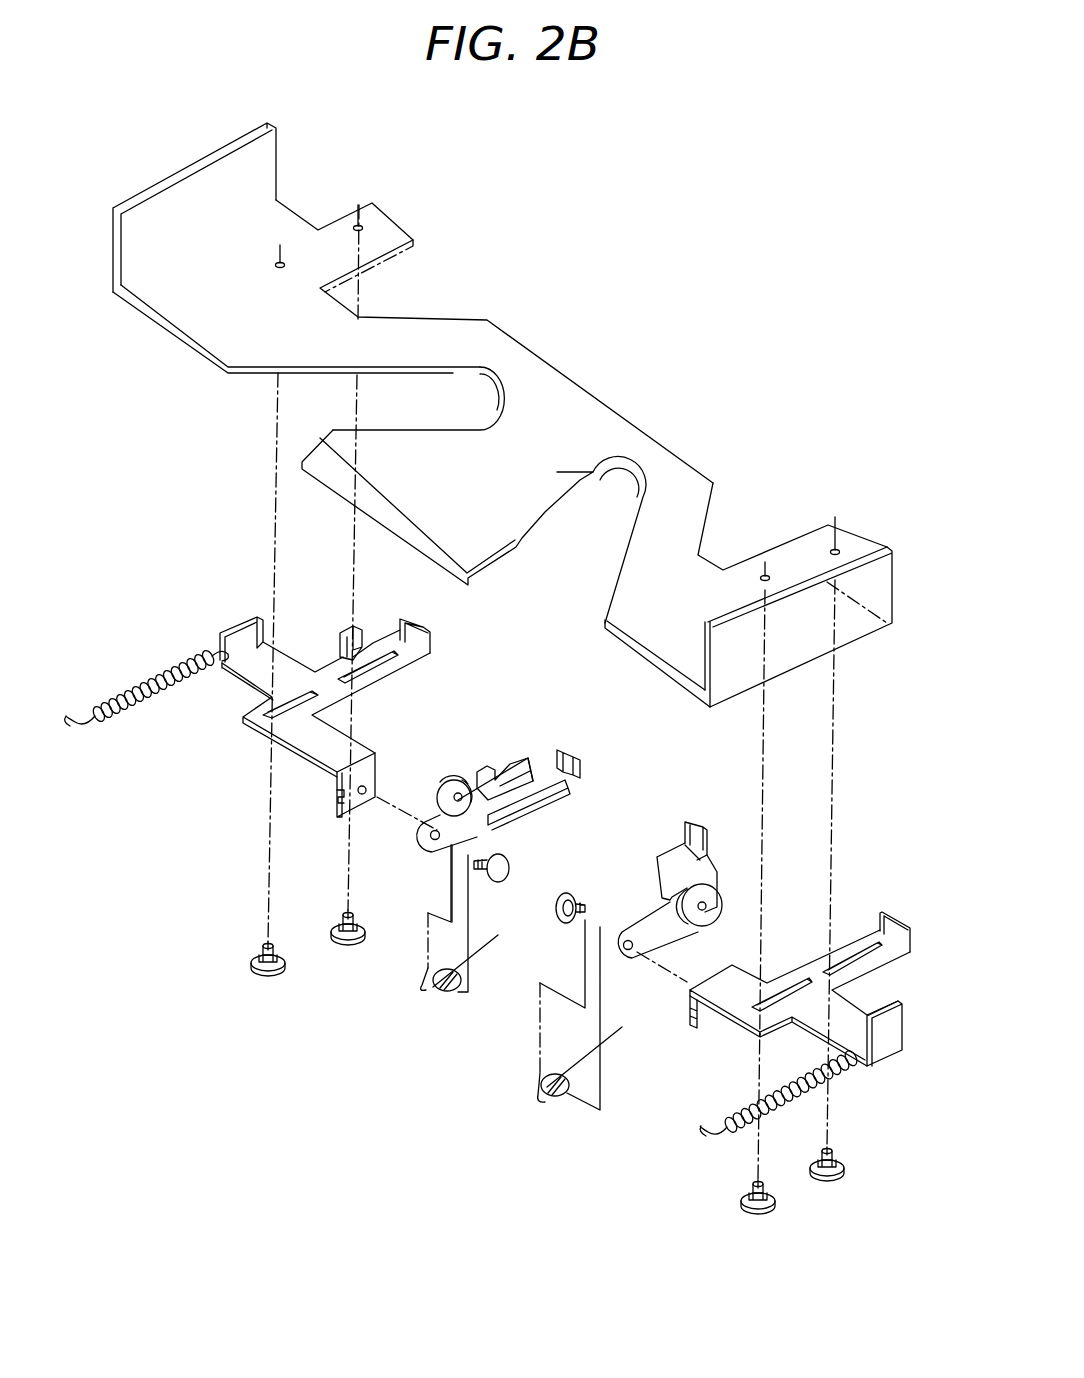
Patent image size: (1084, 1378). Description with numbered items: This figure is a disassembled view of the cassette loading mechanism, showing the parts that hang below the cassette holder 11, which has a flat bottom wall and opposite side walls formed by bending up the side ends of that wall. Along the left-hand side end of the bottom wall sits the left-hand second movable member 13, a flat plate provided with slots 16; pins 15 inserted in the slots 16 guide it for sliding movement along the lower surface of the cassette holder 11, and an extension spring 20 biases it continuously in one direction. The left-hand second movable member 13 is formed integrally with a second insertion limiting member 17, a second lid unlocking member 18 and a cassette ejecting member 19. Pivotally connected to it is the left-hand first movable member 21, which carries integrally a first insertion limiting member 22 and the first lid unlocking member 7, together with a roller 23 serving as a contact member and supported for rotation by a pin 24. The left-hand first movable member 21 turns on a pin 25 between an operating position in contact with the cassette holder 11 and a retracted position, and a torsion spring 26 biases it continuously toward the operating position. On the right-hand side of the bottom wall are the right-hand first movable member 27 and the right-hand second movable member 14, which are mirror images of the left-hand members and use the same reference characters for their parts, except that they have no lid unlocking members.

The first lid unlocking member 7 is at (488, 767).
The cassette holder 11 is at (583, 407).
The left-hand second movable member 13 is at (330, 688).
The right-hand second movable member 14 is at (808, 957).
The pin 15 is at (268, 976).
The slot 16 is at (297, 712).
The second insertion limiting member 17 is at (432, 628).
The second lid unlocking member 18 is at (343, 632).
The cassette ejecting member 19 is at (235, 622).
The extension spring 20 is at (100, 702).
The left-hand first movable member 21 is at (550, 766).
The first insertion limiting member 22 is at (578, 752).
The roller 23 is at (450, 790).
The pin 24 is at (438, 827).
The pin 25 is at (500, 863).
The torsion spring 26 is at (485, 946).
The right-hand first movable member 27 is at (658, 837).